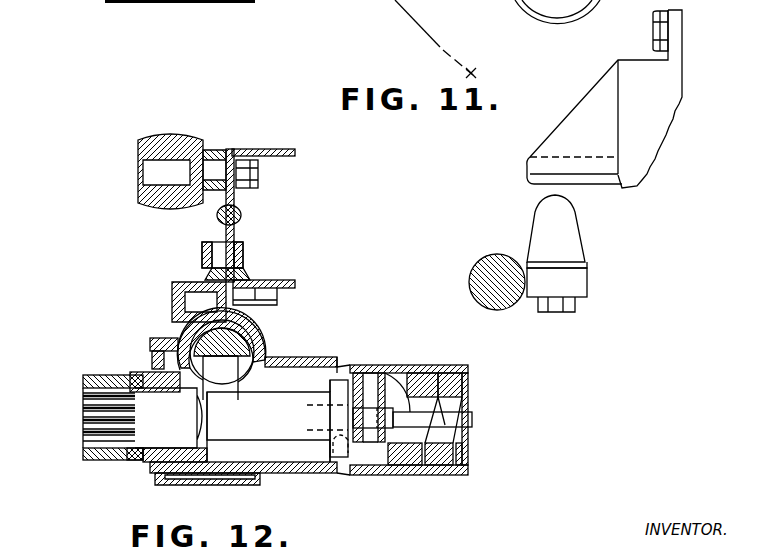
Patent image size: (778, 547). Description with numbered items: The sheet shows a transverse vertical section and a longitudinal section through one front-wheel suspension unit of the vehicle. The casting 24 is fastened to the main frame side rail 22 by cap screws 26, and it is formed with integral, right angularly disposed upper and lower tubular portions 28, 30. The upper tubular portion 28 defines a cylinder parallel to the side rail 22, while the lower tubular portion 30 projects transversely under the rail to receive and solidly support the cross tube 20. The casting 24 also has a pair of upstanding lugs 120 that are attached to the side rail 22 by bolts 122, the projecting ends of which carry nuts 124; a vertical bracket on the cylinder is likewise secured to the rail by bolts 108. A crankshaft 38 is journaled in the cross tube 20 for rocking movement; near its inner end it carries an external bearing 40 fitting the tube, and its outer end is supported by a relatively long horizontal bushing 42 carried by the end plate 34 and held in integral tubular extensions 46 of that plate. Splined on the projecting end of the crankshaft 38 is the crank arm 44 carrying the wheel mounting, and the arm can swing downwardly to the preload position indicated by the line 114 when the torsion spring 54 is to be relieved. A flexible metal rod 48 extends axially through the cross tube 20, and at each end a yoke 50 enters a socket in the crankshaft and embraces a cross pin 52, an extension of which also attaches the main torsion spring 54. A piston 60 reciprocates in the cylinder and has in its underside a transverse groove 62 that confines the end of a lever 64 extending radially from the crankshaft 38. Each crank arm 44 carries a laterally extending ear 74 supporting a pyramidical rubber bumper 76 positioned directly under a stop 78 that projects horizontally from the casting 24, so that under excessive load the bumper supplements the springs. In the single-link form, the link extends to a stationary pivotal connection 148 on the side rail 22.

In FIG. 11, the preload position line 114 is at (420, 30).
In FIG. 11, the bolt 108 is at (652, 31).
In FIG. 11, the casting 24 is at (668, 120).
In FIG. 11, the stop 78 is at (533, 150).
In FIG. 11, the rubber bumper 76 is at (568, 245).
In FIG. 11, the ear 74 is at (577, 287).
In FIG. 11, the crank arm 44 is at (482, 272).
In FIG. 12, the crank arm 44 is at (82, 458).
In FIG. 12, the stationary pivotal connection 148 is at (155, 170).
In FIG. 12, the main frame side rail 22 is at (268, 153).
In FIG. 12, the upstanding lug 120 is at (217, 243).
In FIG. 12, the nut 124 is at (243, 252).
In FIG. 12, the bolt 122 is at (205, 258).
In FIG. 12, the upper tubular portion 28 is at (195, 318).
In FIG. 12, the cap screw 26 is at (170, 330).
In FIG. 12, the transverse groove 62 is at (162, 342).
In FIG. 12, the end plate 34 is at (158, 362).
In FIG. 12, the piston 60 is at (336, 366).
In FIG. 12, the lever 64 is at (248, 348).
In FIG. 12, the external bearing 40 is at (338, 375).
In FIG. 12, the cross pin 52 is at (370, 382).
In FIG. 12, the main torsion spring 54 is at (425, 382).
In FIG. 12, the flexible metal rod 48 is at (448, 417).
In FIG. 12, the crankshaft 38 is at (120, 412).
In FIG. 12, the tubular extension 46 is at (143, 460).
In FIG. 12, the horizontal bushing 42 is at (160, 455).
In FIG. 12, the lower tubular portion 30 is at (253, 483).
In FIG. 12, the cross tube 20 is at (350, 468).
In FIG. 12, the yoke 50 is at (387, 427).